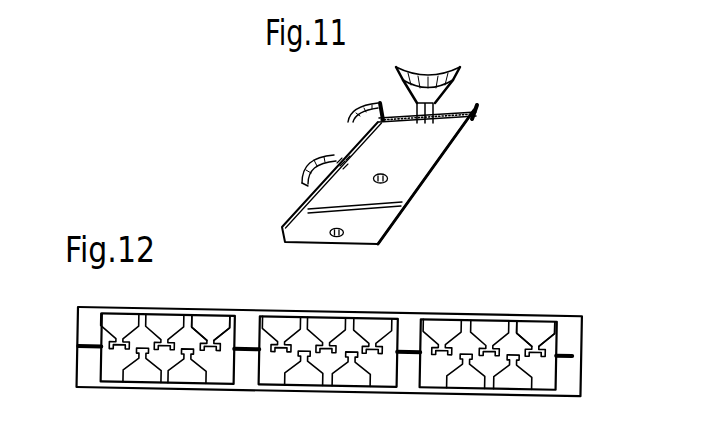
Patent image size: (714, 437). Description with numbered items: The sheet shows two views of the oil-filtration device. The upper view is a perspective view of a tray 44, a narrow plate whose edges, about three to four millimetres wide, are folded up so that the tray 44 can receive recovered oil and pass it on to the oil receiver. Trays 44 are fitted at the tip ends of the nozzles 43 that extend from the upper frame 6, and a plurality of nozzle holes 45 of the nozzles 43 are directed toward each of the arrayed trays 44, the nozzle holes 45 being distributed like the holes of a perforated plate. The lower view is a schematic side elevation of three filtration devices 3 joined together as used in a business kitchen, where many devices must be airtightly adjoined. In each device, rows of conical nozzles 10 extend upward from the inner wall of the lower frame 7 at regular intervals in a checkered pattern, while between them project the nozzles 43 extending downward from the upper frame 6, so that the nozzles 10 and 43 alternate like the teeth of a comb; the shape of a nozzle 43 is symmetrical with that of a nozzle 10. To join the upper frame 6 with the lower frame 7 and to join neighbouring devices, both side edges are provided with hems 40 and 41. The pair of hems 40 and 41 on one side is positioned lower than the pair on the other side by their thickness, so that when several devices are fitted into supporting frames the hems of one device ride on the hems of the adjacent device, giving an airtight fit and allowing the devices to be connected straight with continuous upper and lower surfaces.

In FIG. 12, the connector assembly 3 is at (562, 317).
In FIG. 12, the upper frame 6 is at (168, 313).
In FIG. 12, the lower frame 7 is at (116, 386).
In FIG. 12, the conical nozzle 10 is at (205, 364).
In FIG. 12, the hem 40 is at (84, 343).
In FIG. 12, the hem 41 is at (86, 349).
In FIG. 11, the nozzle 43 is at (458, 83).
In FIG. 12, the nozzle 43 is at (203, 333).
In FIG. 11, the tray 44 is at (447, 147).
In FIG. 11, the nozzle hole 45 is at (438, 132).